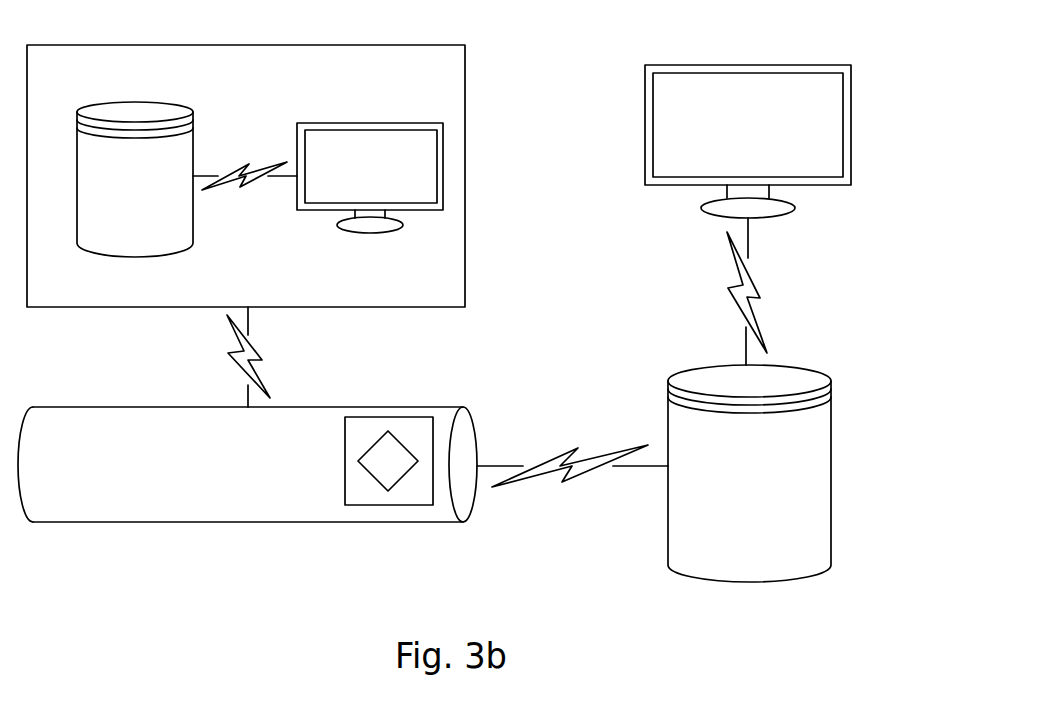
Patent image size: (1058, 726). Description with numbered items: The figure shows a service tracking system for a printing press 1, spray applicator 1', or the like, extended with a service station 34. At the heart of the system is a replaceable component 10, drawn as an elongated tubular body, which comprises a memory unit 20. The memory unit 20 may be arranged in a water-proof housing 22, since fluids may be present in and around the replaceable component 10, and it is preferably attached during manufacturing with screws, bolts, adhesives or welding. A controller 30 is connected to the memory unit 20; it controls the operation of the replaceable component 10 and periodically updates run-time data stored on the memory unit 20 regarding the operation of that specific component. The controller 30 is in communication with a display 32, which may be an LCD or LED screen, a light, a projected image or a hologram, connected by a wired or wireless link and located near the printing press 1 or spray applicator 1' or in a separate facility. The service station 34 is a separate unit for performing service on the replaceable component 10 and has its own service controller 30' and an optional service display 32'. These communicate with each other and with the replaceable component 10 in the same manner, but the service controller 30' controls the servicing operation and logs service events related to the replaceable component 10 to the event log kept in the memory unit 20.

The printing press 1 is at (588, 295).
The spray applicator 1' is at (588, 295).
The replaceable component 10 is at (105, 522).
The memory unit 20 is at (402, 443).
The water-proof housing 22 is at (362, 505).
The controller 30 is at (787, 473).
The service controller 30' is at (156, 154).
The display 32 is at (785, 141).
The service display 32' is at (370, 149).
The service station 34 is at (465, 208).